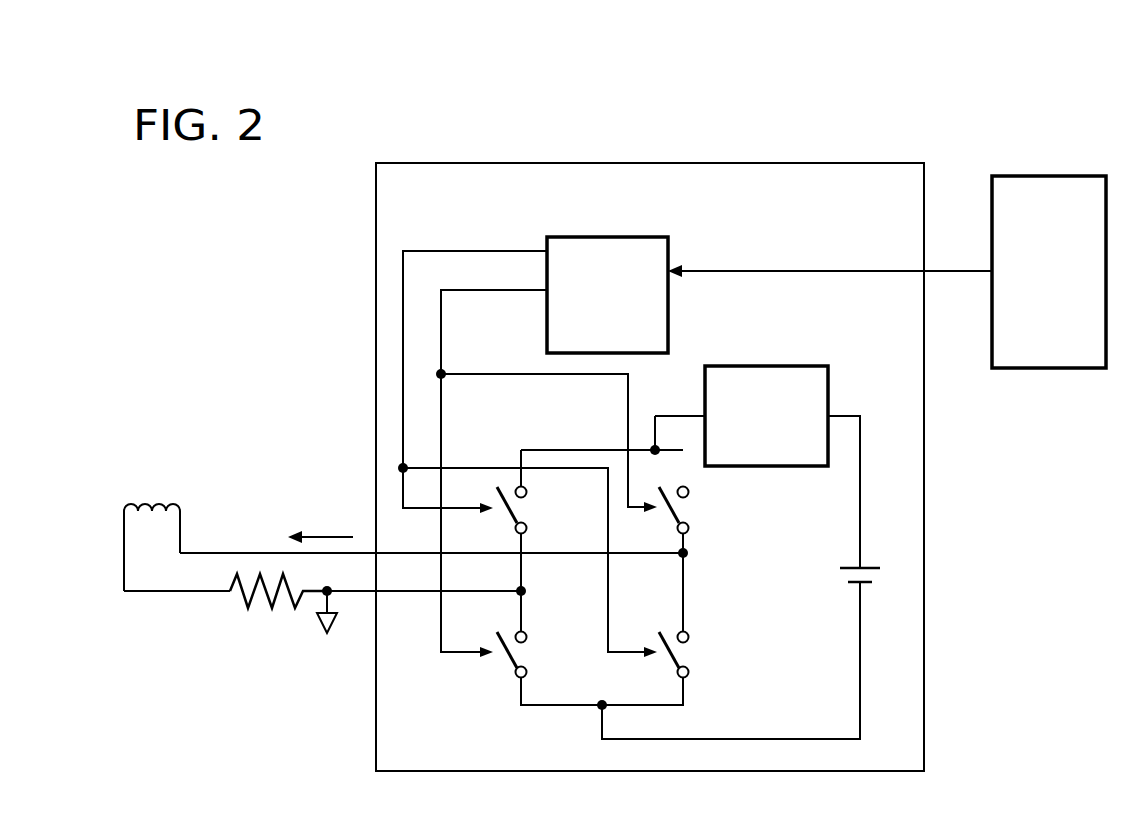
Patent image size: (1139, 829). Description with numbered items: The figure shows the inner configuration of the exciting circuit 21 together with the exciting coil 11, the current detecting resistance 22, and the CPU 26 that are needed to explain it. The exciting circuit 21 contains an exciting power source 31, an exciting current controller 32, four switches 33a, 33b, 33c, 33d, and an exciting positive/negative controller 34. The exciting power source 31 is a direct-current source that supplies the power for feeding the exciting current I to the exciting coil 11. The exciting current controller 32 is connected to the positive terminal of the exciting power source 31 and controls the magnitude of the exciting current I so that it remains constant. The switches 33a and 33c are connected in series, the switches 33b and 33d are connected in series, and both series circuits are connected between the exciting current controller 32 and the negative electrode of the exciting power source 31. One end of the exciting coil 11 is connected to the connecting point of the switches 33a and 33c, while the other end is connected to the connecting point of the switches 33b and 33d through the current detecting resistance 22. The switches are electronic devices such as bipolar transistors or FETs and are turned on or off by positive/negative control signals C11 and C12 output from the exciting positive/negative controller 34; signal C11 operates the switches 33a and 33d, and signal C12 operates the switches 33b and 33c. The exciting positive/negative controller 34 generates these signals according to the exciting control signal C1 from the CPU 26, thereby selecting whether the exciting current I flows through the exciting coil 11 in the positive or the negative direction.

The exciting coil 11 is at (160, 504).
The exciting circuit 21 is at (861, 163).
The current detecting resistance 22 is at (266, 598).
The CPU 26 is at (1055, 176).
The exciting power source 31 is at (868, 566).
The exciting current controller 32 is at (782, 366).
The switch 33a is at (705, 508).
The switch 33b is at (536, 513).
The switch 33c is at (705, 652).
The switch 33d is at (538, 655).
The exciting positive/negative controller 34 is at (625, 237).
The exciting control signal C1 is at (961, 270).
The positive/negative control signal C11 is at (494, 291).
The positive/negative control signal C12 is at (470, 250).
The exciting current I is at (330, 535).